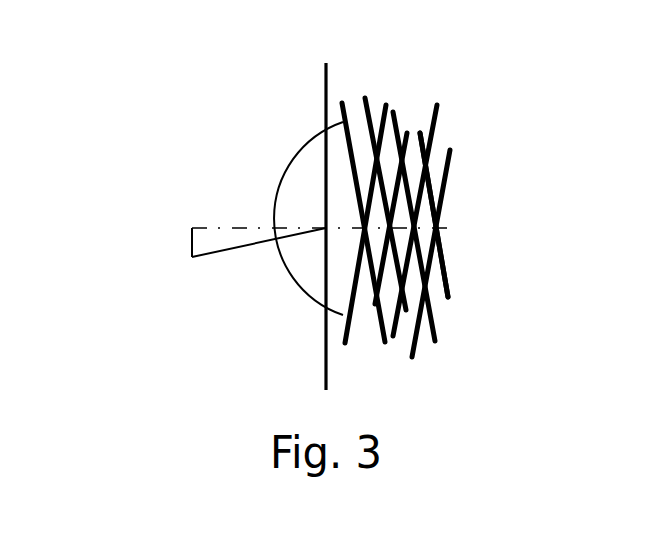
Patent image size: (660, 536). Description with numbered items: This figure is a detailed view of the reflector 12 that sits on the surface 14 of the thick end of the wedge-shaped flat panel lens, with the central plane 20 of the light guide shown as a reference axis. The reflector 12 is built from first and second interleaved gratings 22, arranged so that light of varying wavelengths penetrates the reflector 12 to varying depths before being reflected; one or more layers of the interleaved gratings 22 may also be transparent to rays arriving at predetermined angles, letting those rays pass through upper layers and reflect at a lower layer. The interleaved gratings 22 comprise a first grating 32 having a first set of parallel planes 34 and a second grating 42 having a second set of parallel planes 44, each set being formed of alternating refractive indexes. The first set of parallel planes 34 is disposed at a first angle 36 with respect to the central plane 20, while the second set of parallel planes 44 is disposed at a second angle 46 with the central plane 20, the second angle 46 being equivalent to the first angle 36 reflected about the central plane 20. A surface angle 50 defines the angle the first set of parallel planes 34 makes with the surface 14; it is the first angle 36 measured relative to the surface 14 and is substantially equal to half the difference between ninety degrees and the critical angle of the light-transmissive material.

The reflector 12 is at (512, 75).
The surface 14 is at (326, 82).
The central plane 20 is at (237, 225).
The first and second interleaved gratings 22 is at (453, 227).
The first grating 32 is at (433, 227).
The first set of parallel planes 34 is at (367, 100).
The first angle 36 is at (283, 175).
The second grating 42 is at (450, 342).
The second set of parallel planes 44 is at (415, 355).
The second angle 46 is at (288, 284).
The surface angle 50 is at (192, 242).